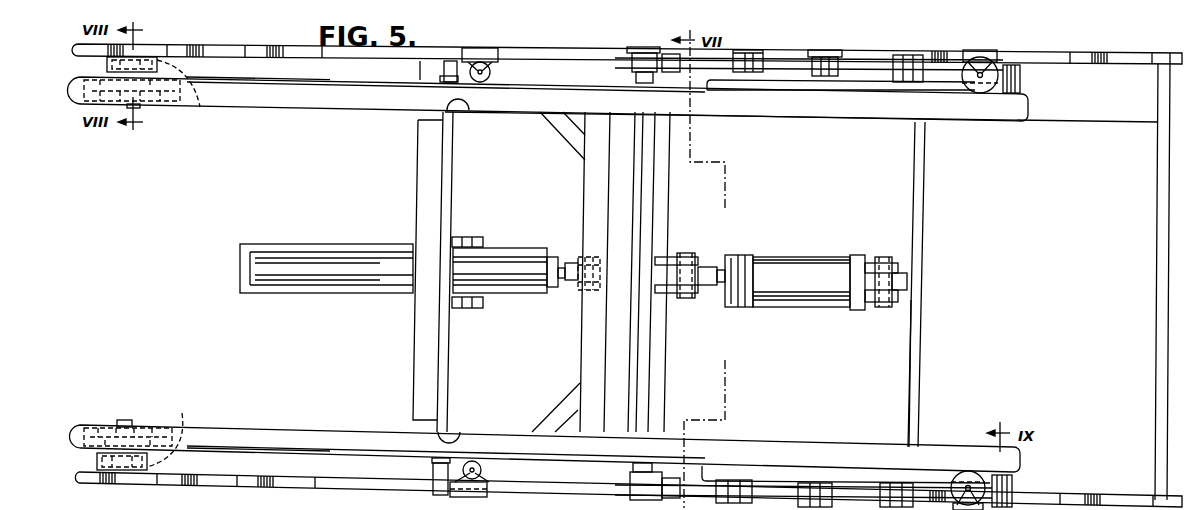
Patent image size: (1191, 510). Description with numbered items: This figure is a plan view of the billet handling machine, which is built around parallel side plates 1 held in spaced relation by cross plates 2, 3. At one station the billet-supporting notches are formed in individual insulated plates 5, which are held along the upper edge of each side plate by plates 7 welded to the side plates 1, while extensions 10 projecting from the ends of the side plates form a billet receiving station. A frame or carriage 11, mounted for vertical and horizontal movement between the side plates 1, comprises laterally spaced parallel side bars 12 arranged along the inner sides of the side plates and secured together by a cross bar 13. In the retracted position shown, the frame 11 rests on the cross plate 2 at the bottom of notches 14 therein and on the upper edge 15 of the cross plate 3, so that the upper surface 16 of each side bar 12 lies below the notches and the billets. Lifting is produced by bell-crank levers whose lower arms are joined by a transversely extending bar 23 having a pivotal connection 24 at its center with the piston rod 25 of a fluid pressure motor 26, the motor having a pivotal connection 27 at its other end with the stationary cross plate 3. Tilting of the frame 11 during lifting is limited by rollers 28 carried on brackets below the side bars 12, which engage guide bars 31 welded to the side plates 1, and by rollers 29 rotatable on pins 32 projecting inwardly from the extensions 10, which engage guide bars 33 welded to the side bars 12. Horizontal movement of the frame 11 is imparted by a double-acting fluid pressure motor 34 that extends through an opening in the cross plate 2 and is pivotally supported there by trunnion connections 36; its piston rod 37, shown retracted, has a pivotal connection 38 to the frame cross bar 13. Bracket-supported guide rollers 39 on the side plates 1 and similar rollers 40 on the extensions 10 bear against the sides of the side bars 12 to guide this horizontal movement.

The side plates 1 is at (241, 46).
The cross plate 2 is at (449, 166).
The cross plate 3 is at (926, 206).
The insulated plates 5 is at (766, 62).
The plates 7 is at (895, 58).
The extensions 10 is at (1129, 66).
The frame 11 is at (574, 360).
The side bars 12 is at (346, 107).
The cross bar 13 is at (612, 187).
The notches 14 is at (471, 111).
The upper edge 15 is at (913, 348).
The upper surface 16 is at (284, 98).
The bar 23 is at (667, 343).
The pivotal connection 24 is at (686, 255).
The piston rod 25 is at (724, 263).
The fluid pressure motor 26 is at (805, 309).
The pivotal connection 27 is at (879, 257).
The rollers 28 is at (200, 107).
The rollers 29 is at (1022, 90).
The guide bars 31 is at (250, 72).
The pins 32 is at (133, 105).
The guide bars 33 is at (879, 91).
The double-acting fluid pressure motor 34 is at (327, 262).
The trunnion connections 36 is at (474, 310).
The piston rod 37 is at (506, 233).
The pivotal connection 38 is at (586, 302).
The guide rollers 39 is at (491, 73).
The rollers 40 is at (980, 90).